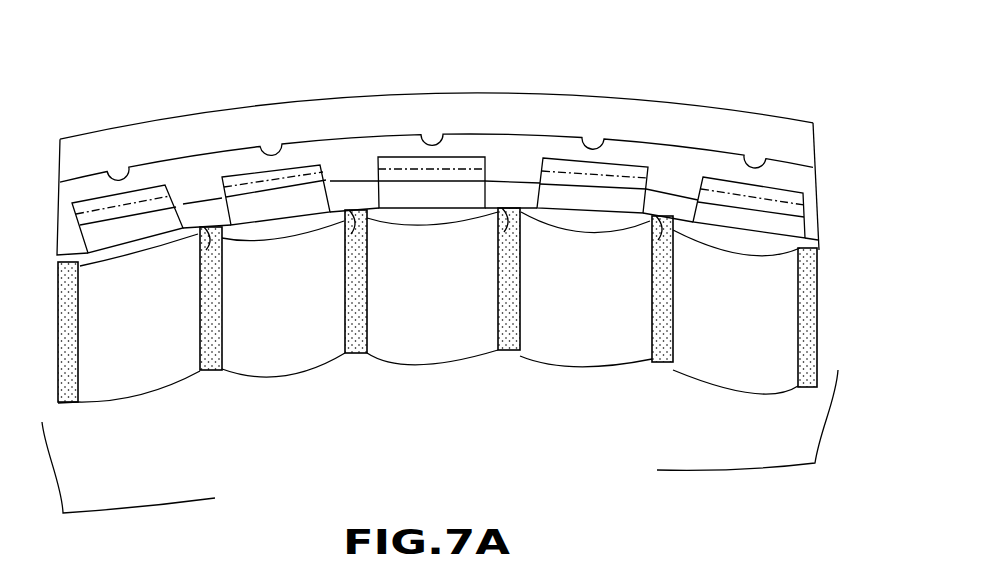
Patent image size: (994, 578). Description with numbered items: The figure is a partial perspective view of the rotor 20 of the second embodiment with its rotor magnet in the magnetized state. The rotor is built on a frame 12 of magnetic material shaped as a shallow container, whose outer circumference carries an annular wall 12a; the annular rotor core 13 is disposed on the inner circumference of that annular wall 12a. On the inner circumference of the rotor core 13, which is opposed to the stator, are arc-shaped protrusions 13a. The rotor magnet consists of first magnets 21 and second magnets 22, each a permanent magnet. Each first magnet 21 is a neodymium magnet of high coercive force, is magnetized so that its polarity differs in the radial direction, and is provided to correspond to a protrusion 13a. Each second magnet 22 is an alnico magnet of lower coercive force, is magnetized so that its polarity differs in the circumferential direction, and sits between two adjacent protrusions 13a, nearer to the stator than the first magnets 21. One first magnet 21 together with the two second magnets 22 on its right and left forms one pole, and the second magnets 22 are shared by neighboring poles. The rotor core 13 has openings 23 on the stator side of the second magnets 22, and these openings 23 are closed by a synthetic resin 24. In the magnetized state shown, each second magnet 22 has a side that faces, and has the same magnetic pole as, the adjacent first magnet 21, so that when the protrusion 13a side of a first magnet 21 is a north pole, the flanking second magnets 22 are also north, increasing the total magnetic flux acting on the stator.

The frame 12 is at (723, 432).
The annular wall 12a is at (687, 102).
The rotor core 13 is at (391, 95).
The protrusions 13a is at (148, 376).
The rotor 20 is at (560, 93).
The first magnet 21 is at (150, 187).
The second magnet 22 is at (203, 227).
The openings 23 is at (346, 242).
The synthetic resin 24 is at (354, 292).